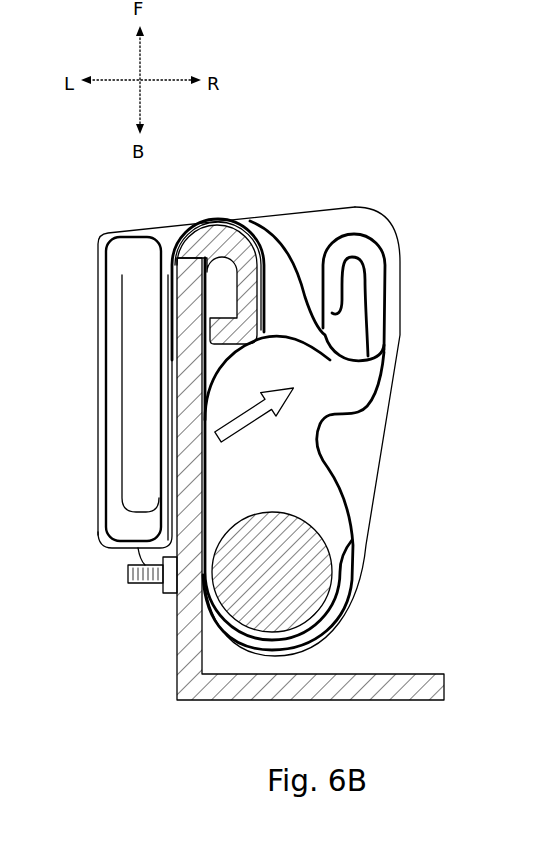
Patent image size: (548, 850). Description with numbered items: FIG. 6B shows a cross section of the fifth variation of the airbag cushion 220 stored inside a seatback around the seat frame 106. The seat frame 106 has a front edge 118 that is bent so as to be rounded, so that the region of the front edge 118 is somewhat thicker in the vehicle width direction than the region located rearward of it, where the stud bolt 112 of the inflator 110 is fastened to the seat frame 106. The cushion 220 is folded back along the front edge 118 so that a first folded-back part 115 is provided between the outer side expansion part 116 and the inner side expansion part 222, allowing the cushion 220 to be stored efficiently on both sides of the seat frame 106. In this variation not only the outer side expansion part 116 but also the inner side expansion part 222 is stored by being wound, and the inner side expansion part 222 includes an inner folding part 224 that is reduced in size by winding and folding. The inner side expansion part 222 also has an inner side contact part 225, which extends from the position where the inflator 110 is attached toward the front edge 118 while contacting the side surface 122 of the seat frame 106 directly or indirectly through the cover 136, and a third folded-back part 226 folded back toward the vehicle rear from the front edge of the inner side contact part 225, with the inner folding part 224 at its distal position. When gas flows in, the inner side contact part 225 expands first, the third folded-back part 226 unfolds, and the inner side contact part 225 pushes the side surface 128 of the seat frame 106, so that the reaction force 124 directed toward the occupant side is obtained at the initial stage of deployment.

The seat frame 106 is at (210, 700).
The inflator 110 is at (337, 567).
The stud bolt 112 is at (147, 588).
The first folded-back part 115 is at (183, 224).
The outer side expansion part 116 is at (123, 237).
The front edge 118 is at (218, 226).
The side surface 122 is at (208, 472).
The reaction force 124 is at (297, 392).
The side surface 128 is at (100, 520).
The cover 136 is at (97, 355).
The cushion 220 is at (357, 522).
The inner side expansion part 222 is at (364, 217).
The inner folding part 224 is at (370, 280).
The inner side contact part 225 is at (320, 437).
The third folded-back part 226 is at (278, 333).